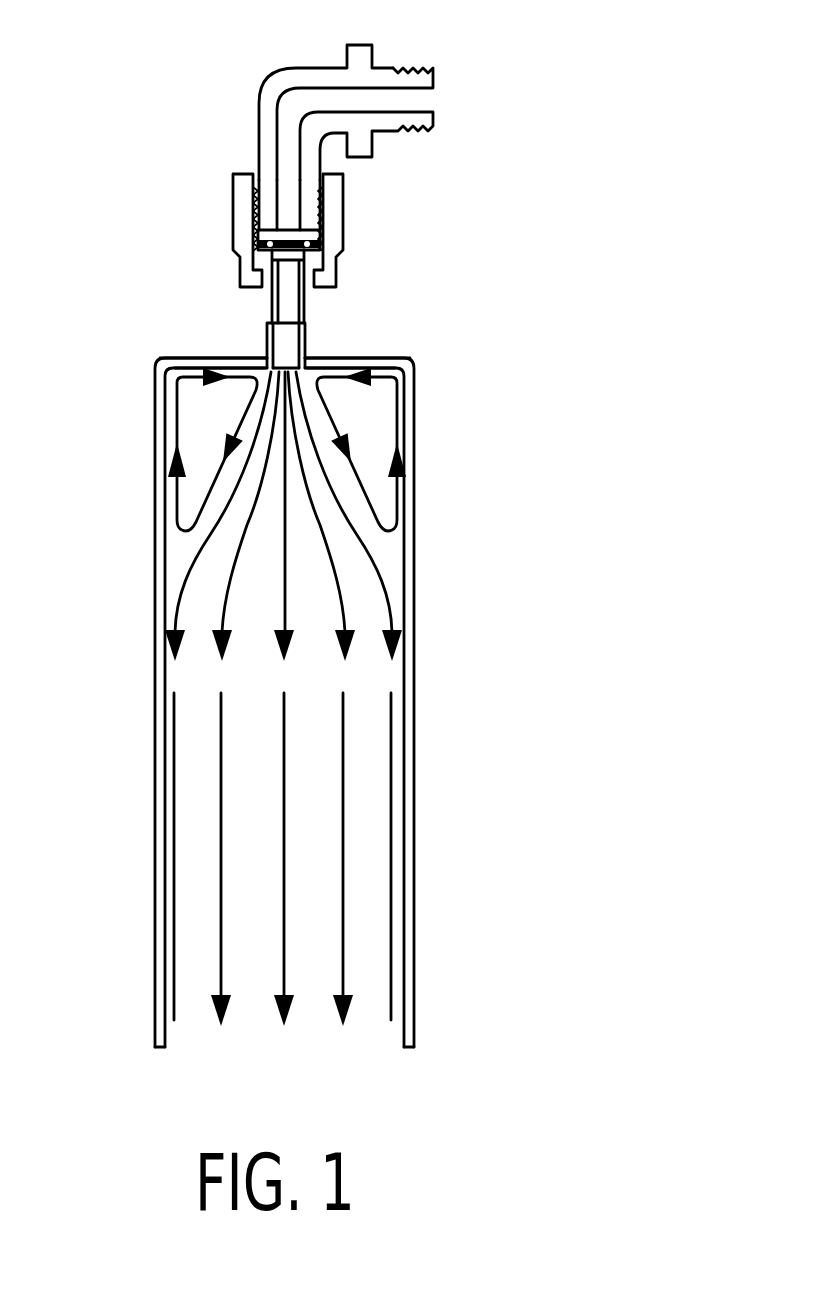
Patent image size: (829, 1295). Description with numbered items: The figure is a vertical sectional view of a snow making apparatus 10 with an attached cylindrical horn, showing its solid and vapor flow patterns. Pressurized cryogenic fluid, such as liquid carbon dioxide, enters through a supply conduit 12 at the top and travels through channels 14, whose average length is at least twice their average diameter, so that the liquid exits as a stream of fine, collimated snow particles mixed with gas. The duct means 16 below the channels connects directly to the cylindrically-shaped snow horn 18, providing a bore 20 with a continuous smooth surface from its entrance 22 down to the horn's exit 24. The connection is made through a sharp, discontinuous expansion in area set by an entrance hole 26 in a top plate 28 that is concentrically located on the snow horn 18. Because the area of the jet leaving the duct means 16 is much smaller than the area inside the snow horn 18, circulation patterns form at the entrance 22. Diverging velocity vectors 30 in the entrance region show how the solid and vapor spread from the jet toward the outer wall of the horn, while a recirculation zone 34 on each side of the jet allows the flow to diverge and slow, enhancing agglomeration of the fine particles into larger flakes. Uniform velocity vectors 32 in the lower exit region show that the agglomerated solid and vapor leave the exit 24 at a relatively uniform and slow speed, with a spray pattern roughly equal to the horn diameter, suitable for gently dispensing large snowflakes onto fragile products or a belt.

The fluid delivery and mixing apparatus 10 is at (172, 210).
The supply conduit 12 is at (397, 68).
The channels 14 is at (330, 237).
The duct means 16 is at (271, 300).
The snow horn 18 is at (155, 610).
The bore 20 is at (405, 668).
The entrance 22 is at (177, 357).
The exit 24 is at (150, 1043).
The entrance hole 26 is at (293, 362).
The top plate 28 is at (200, 357).
The diverging velocity vectors 30 is at (377, 563).
The uniform velocity vectors 32 is at (283, 925).
The recirculation zone 34 is at (177, 416).